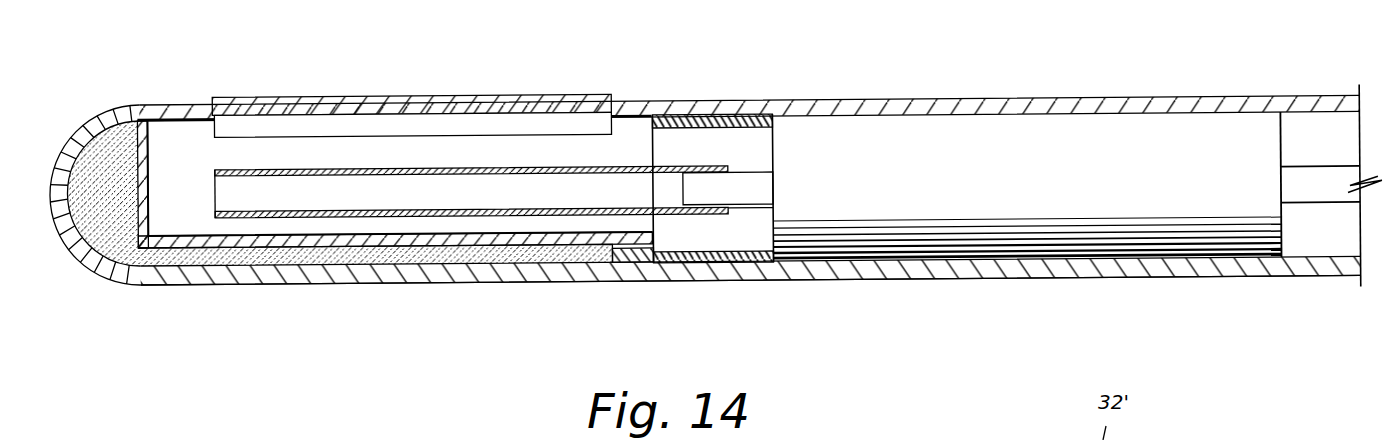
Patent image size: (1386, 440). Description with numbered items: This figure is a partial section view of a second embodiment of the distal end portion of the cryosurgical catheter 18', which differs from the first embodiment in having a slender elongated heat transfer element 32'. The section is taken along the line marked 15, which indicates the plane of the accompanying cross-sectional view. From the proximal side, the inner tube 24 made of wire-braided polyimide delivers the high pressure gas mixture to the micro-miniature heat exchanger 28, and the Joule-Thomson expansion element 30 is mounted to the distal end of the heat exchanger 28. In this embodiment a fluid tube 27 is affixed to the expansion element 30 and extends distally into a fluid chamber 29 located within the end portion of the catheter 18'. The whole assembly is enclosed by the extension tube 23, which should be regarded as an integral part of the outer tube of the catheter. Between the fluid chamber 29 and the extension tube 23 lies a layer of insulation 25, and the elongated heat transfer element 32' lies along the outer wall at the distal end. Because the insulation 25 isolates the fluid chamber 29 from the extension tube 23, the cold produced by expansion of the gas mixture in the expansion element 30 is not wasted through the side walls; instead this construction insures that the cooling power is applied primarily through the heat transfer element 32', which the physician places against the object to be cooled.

The section line 15- 15 is at (314, 65).
The catheter 18' is at (705, 171).
The extension tube 23 is at (249, 286).
The inner tube 24 is at (1307, 192).
The insulation 25 is at (98, 143).
The fluid tube 27 is at (337, 168).
The heat exchanger 28 is at (1266, 142).
The fluid chamber 29 is at (166, 242).
The expansion element 30 is at (750, 178).
The heat transfer element 32' is at (405, 94).